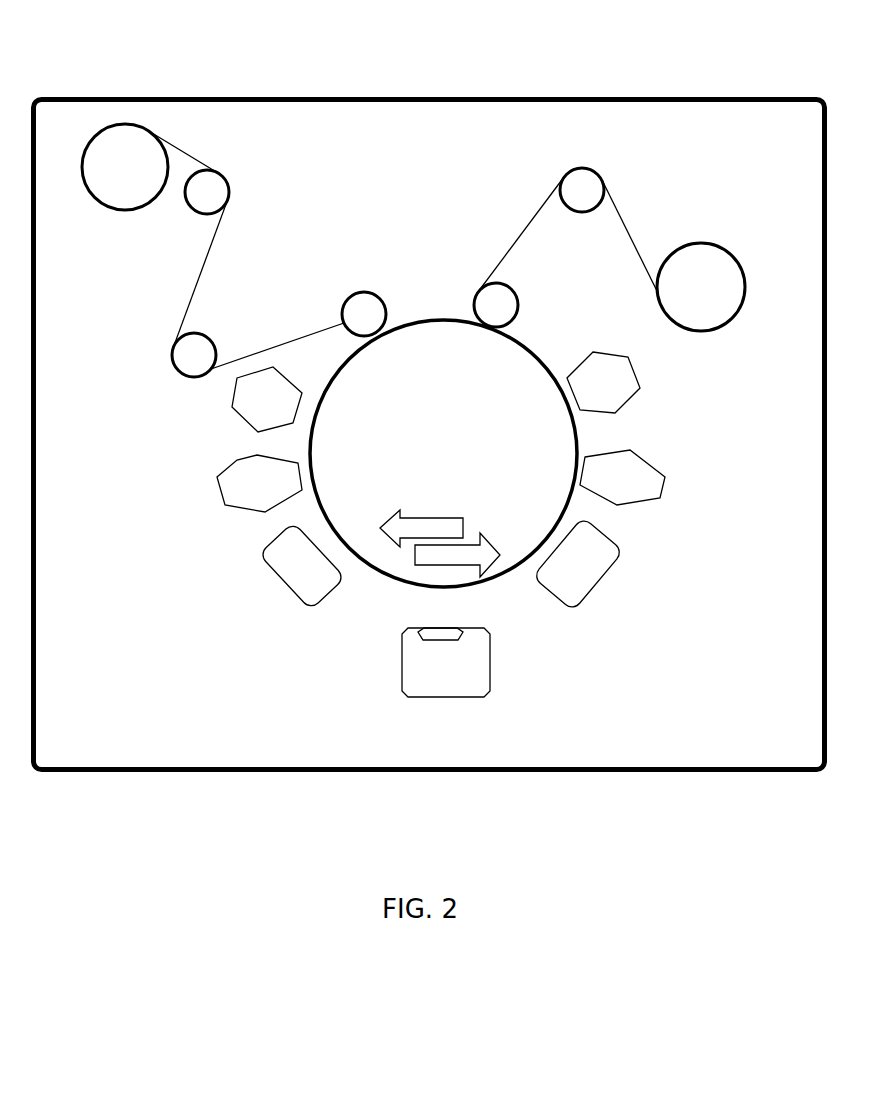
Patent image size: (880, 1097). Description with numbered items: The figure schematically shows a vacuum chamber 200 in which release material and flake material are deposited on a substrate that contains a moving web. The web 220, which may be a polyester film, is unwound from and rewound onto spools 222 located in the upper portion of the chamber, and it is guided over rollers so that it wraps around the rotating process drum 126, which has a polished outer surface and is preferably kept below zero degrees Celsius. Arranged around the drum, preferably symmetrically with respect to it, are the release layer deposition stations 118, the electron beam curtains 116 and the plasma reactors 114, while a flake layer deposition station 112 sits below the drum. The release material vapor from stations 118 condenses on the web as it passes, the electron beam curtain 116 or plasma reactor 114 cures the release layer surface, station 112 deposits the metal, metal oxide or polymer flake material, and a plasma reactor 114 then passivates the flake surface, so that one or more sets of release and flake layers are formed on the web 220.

The vacuum chamber 200 is at (505, 42).
The spools 222 is at (128, 180).
The web 220 is at (277, 320).
The process drum 126 is at (332, 423).
The release layer deposition station 118 is at (237, 380).
The electron beam curtain 116 is at (237, 462).
The plasma reactor 114 is at (290, 548).
The flake layer deposition station 112 is at (410, 625).